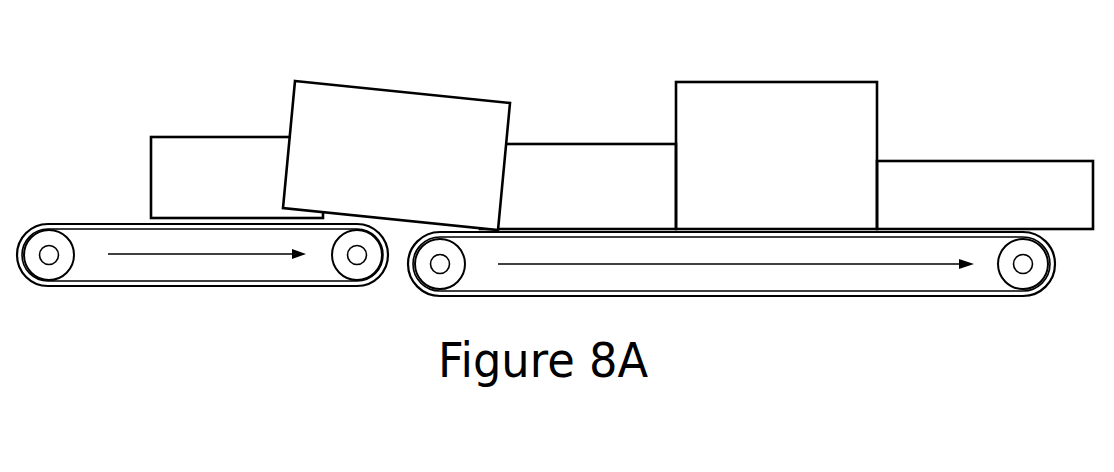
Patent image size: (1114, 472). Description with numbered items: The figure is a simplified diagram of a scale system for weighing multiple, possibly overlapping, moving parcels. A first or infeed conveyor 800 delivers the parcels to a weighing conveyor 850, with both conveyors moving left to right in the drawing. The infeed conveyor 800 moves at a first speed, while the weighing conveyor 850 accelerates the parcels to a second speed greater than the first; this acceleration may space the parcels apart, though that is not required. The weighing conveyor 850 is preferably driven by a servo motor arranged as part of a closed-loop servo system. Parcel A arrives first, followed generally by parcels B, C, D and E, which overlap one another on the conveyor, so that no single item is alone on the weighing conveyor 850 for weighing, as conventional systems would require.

The infeed conveyor 800 is at (201, 287).
The weighing conveyor 850 is at (923, 298).
The parcel A is at (986, 161).
The parcel B is at (778, 82).
The parcel C is at (592, 144).
The parcel D is at (404, 92).
The parcel E is at (222, 137).